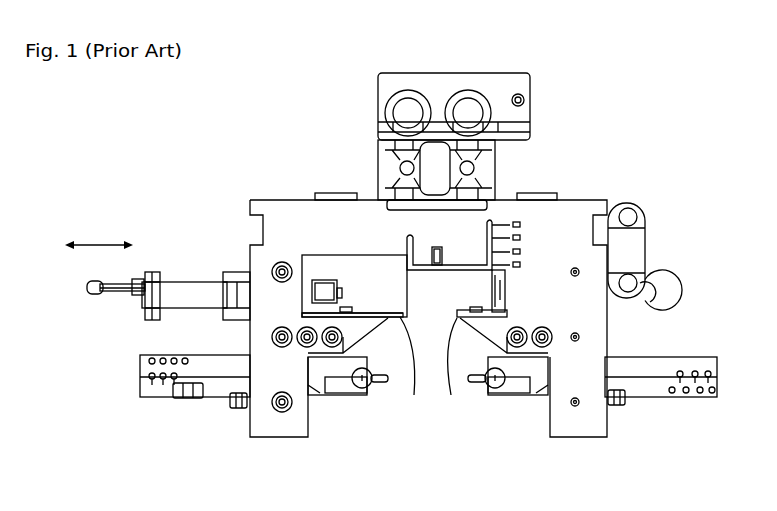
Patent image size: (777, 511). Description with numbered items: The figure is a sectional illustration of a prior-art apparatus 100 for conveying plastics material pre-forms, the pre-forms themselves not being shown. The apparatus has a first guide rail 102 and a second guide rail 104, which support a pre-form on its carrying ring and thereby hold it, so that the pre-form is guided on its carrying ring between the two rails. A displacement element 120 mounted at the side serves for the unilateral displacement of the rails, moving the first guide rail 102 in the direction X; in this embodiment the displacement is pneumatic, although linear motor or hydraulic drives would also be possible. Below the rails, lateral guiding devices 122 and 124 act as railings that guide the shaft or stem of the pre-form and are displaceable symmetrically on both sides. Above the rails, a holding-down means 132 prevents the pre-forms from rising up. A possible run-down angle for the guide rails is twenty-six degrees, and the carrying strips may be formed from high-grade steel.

The apparatus 100 is at (578, 158).
The first guide rail 102 is at (414, 395).
The second guide rail 104 is at (451, 395).
The displacement element 120 is at (193, 283).
The lateral guiding device 122 is at (384, 382).
The lateral guiding device 124 is at (474, 381).
The holding-down means 132 is at (428, 262).